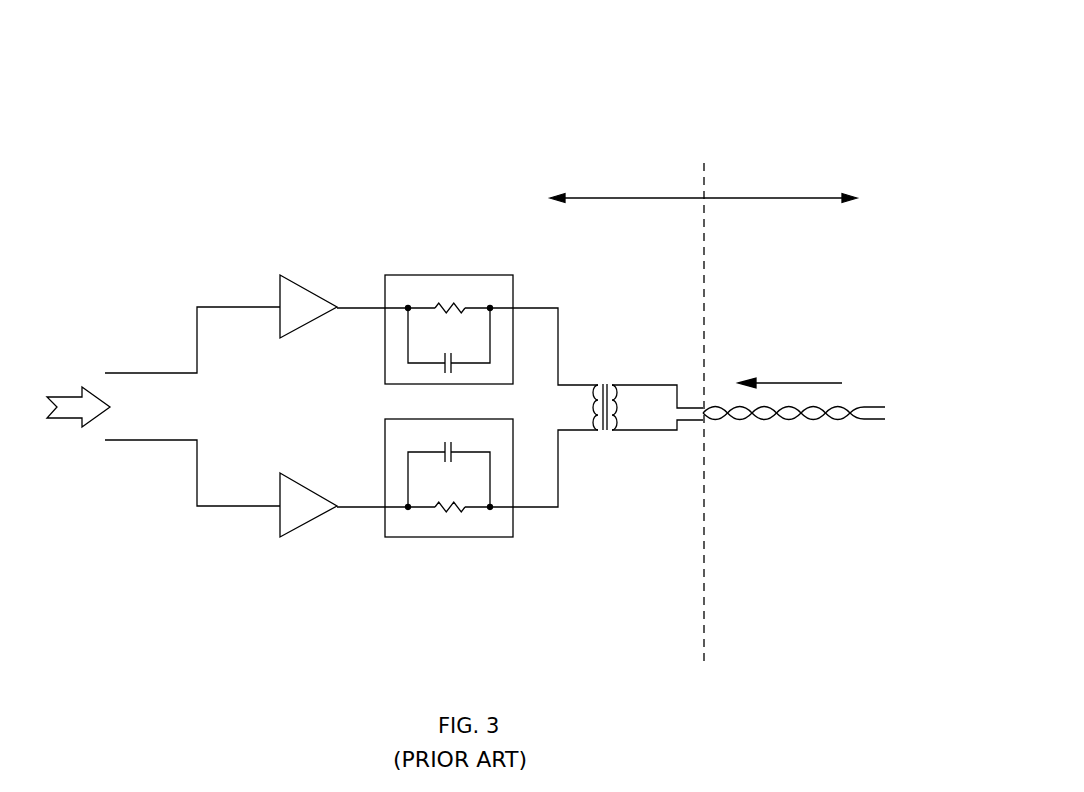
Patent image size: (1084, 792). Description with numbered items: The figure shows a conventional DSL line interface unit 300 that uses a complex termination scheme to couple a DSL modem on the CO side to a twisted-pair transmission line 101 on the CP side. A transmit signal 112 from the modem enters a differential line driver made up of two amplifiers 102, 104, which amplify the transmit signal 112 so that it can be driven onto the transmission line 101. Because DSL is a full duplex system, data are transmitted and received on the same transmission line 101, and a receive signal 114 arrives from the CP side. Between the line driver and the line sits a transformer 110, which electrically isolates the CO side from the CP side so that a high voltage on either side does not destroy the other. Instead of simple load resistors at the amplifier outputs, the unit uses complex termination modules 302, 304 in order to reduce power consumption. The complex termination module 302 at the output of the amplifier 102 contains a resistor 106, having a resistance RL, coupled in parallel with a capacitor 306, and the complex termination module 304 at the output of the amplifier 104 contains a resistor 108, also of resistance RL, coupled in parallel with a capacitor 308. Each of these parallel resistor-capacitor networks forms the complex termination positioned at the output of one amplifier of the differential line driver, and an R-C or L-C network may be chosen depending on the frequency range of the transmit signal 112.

The prior art xDSL transceiver system 300 is at (548, 109).
The transmission line 101 is at (812, 421).
The amplifier 102 is at (305, 283).
The amplifier 104 is at (305, 528).
The resistor 106 is at (465, 308).
The resistor 108 is at (465, 507).
The transformer 110 is at (610, 360).
The transmit signal 112 is at (75, 419).
The receive signal 114 is at (788, 322).
The complex termination module 302 is at (485, 275).
The complex termination module 304 is at (470, 540).
The capacitor 306 is at (443, 370).
The capacitor 308 is at (452, 447).